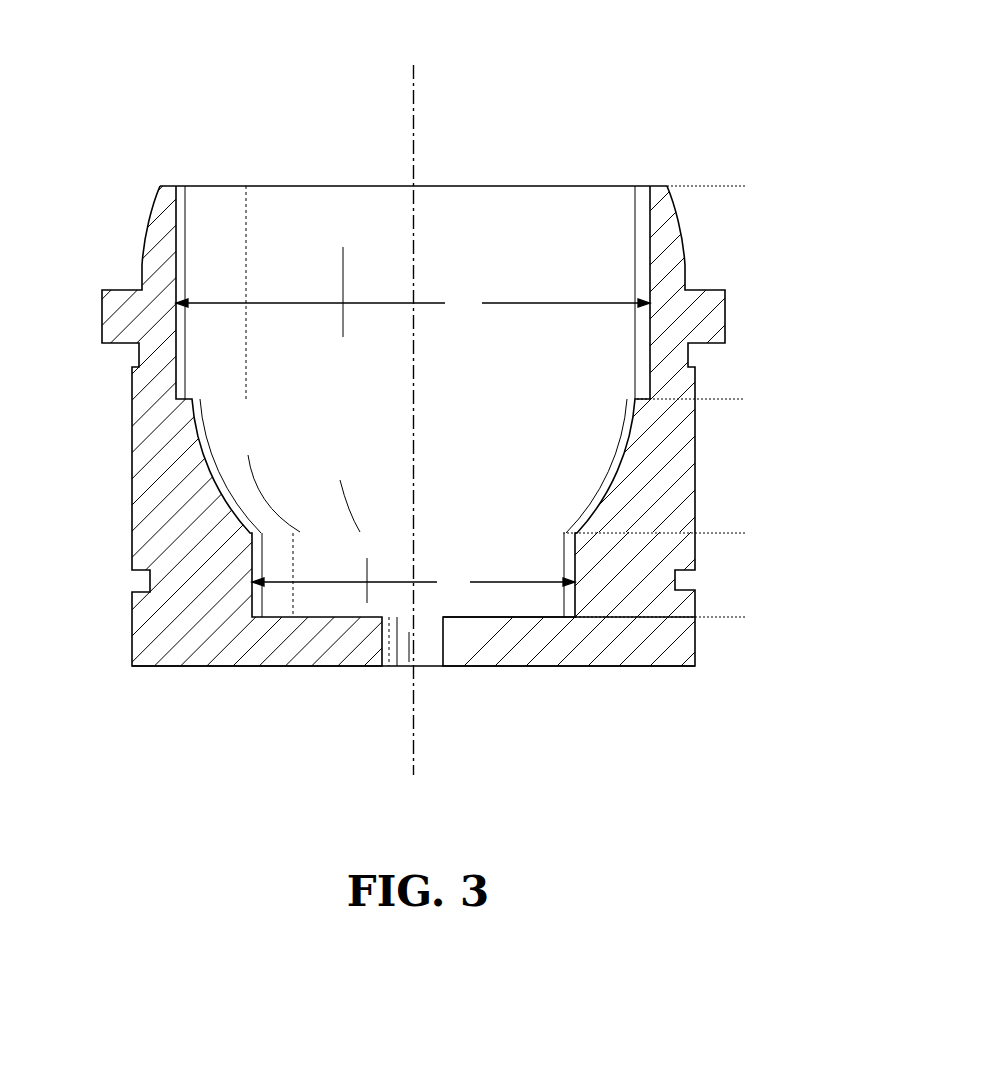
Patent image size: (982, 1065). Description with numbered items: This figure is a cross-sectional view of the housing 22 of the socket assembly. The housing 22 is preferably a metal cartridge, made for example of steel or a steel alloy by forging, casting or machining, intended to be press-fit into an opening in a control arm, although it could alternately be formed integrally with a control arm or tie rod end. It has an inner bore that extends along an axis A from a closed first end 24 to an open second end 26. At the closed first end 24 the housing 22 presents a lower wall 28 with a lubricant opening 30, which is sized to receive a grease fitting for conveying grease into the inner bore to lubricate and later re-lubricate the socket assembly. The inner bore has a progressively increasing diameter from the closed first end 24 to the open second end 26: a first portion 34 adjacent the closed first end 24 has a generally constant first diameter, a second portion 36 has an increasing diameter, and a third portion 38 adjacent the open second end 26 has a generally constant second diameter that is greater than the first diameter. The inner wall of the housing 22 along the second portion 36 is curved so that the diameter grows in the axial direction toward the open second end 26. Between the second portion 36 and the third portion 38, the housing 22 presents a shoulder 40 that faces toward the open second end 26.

The housing 22 is at (598, 118).
The closed first end 24 is at (545, 618).
The open second end 26 is at (467, 186).
The lower wall 28 is at (550, 640).
The lubricant opening 30 is at (393, 643).
The first portion 34 is at (745, 533).
The second portion 36 is at (745, 399).
The third portion 38 is at (745, 186).
The shoulder 40 is at (192, 398).
The axis A is at (414, 90).